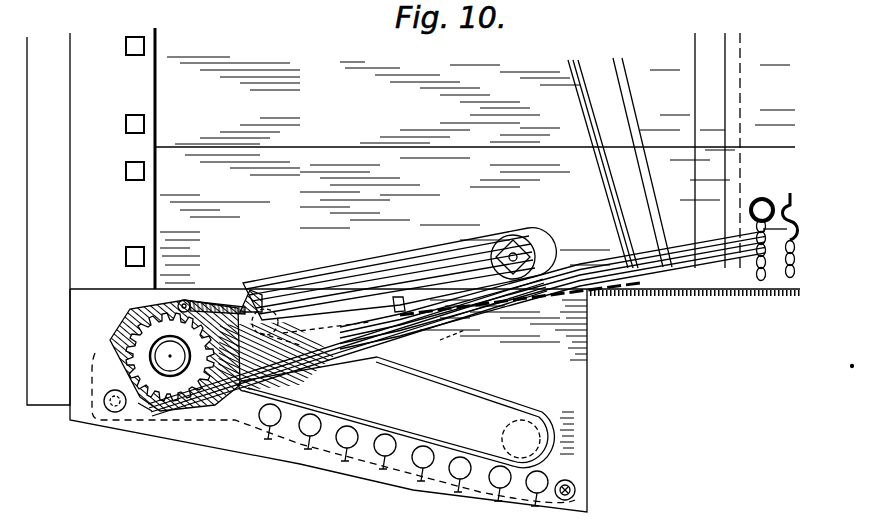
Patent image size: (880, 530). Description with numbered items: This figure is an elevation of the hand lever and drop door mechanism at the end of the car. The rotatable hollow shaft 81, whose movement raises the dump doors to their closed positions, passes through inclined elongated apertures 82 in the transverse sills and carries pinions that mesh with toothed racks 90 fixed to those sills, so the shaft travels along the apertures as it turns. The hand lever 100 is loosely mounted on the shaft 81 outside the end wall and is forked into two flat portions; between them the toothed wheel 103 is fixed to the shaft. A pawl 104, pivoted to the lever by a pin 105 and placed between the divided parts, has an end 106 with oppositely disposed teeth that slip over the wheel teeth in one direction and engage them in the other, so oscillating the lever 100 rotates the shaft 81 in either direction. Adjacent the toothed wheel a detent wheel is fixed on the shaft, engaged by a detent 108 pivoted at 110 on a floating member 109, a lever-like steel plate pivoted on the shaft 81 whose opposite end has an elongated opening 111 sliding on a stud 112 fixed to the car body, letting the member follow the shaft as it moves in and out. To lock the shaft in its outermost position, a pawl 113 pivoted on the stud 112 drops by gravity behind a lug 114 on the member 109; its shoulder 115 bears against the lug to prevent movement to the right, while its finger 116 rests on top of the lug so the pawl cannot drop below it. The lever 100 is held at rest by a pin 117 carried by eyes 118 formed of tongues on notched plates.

The shaft 81 is at (143, 408).
The inclined elongated apertures 82 is at (397, 412).
The toothed racks 90 is at (365, 470).
The hand lever 100 is at (595, 290).
The toothed wheel 103 is at (117, 376).
The pawl 104 is at (195, 305).
The pin 105 is at (335, 285).
The end of the pawl 106 is at (185, 300).
The detent 108 is at (185, 301).
The floating member 109 is at (300, 305).
The pivot 110 is at (245, 300).
The elongated opening 111 is at (432, 273).
The stud 112 is at (518, 238).
The pawl 113 is at (477, 262).
The lug 114 is at (455, 337).
The shoulder 115 is at (500, 302).
The finger 116 is at (397, 297).
The pin 117 is at (760, 203).
The eyes 118 is at (752, 197).